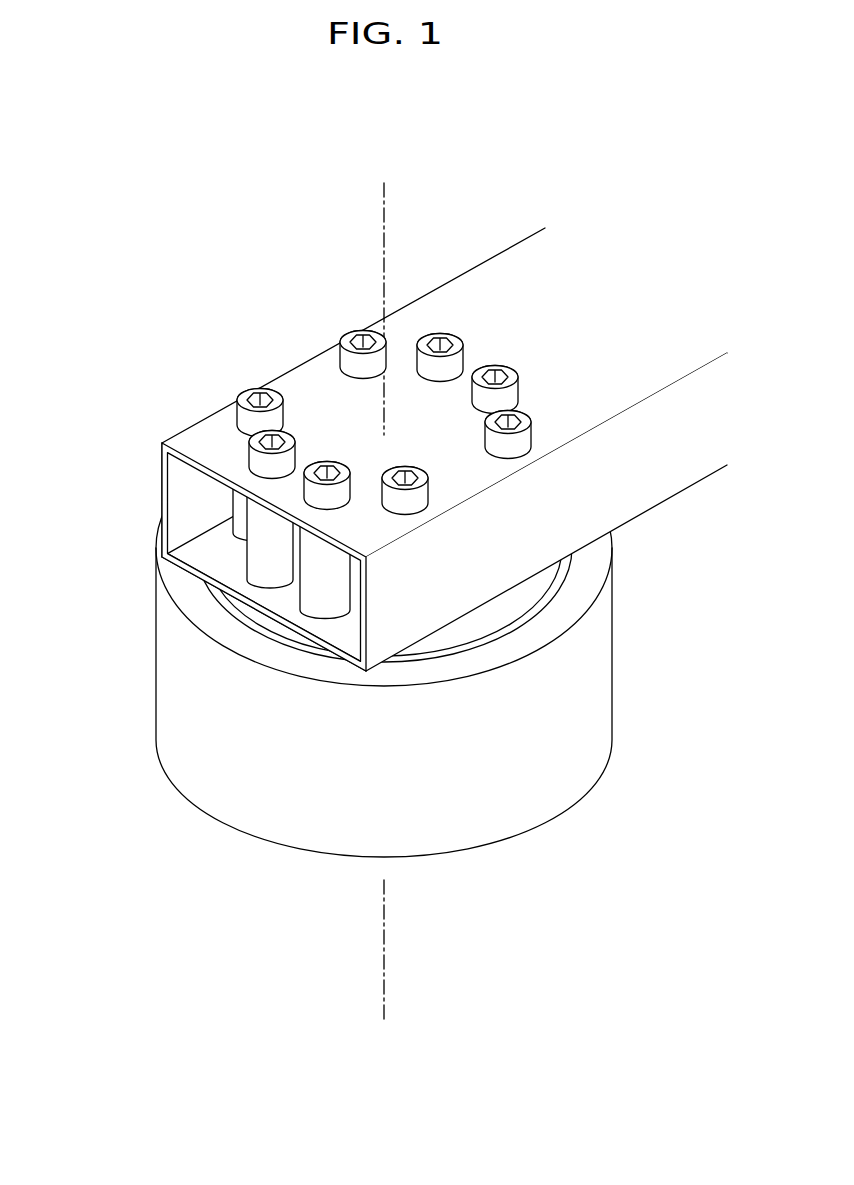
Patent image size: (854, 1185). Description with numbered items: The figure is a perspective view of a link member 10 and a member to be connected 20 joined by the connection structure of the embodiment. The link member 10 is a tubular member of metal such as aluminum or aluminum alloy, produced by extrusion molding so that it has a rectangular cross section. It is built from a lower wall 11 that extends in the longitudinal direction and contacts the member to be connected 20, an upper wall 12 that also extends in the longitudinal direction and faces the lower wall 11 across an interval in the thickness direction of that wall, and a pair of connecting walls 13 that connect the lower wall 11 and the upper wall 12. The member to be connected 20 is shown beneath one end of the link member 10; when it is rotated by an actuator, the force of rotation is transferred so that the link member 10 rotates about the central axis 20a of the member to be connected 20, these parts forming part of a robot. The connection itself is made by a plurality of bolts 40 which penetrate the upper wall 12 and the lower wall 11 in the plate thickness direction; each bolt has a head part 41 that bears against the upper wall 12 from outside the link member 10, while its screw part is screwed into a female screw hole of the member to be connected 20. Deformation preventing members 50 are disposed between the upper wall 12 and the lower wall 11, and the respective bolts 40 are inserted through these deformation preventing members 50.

The link member 10 is at (510, 248).
The lower wall 11 is at (350, 634).
The upper wall 12 is at (556, 285).
The connecting walls 13 is at (183, 478).
The member to be connected 20 is at (523, 594).
The central axis 20a is at (383, 203).
The bolts 40 is at (260, 388).
The head part 41 is at (465, 360).
The deformation preventing members 50 is at (230, 504).